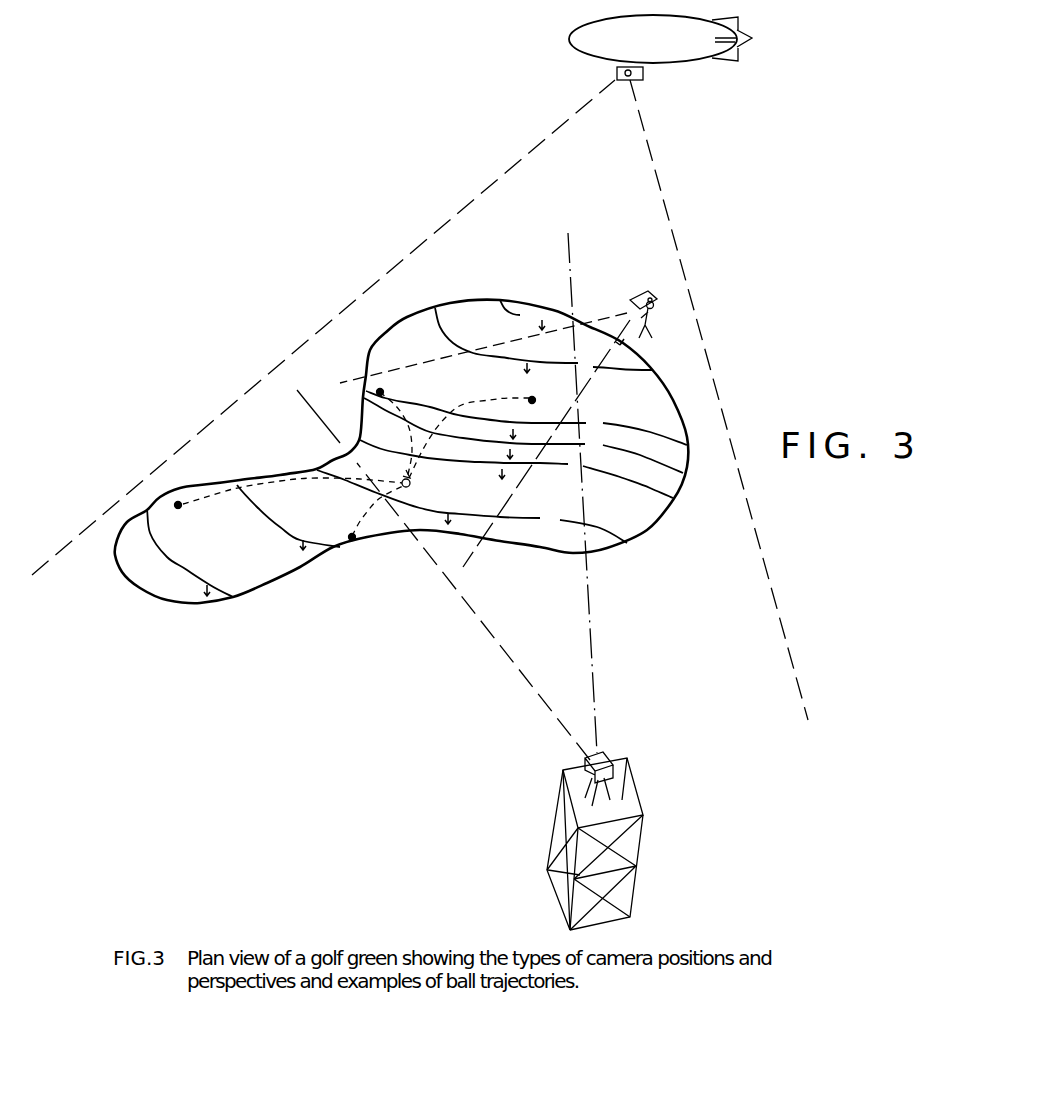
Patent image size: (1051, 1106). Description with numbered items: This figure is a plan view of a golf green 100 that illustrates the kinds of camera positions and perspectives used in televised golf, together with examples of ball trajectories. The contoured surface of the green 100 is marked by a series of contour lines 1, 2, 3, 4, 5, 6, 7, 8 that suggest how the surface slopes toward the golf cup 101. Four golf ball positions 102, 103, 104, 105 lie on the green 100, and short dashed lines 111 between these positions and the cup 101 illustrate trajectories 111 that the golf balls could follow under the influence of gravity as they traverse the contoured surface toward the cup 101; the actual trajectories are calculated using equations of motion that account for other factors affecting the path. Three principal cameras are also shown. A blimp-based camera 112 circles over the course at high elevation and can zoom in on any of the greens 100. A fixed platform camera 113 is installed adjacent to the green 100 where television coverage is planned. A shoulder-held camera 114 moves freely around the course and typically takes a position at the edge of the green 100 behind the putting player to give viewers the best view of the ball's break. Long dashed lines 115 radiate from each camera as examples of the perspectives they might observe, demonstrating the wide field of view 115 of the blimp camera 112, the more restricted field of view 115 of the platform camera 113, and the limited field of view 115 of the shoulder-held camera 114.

The golf green 100 is at (510, 298).
The golf cup 101 is at (425, 482).
The golf ball position 102 is at (398, 386).
The golf ball position 103 is at (177, 517).
The golf ball position 104 is at (369, 535).
The golf ball position 105 is at (548, 393).
The ball trajectories 111 is at (402, 410).
The blimp-based camera 112 is at (647, 80).
The platform camera 113 is at (613, 757).
The shoulder-held camera 114 is at (638, 296).
The field of view 115 is at (390, 265).
The contour line 1 is at (190, 553).
The contour line 2 is at (288, 516).
The contour line 3 is at (472, 506).
The contour line 4 is at (516, 469).
The contour line 5 is at (523, 435).
The contour line 6 is at (526, 418).
The contour line 7 is at (544, 342).
The contour line 8 is at (540, 318).